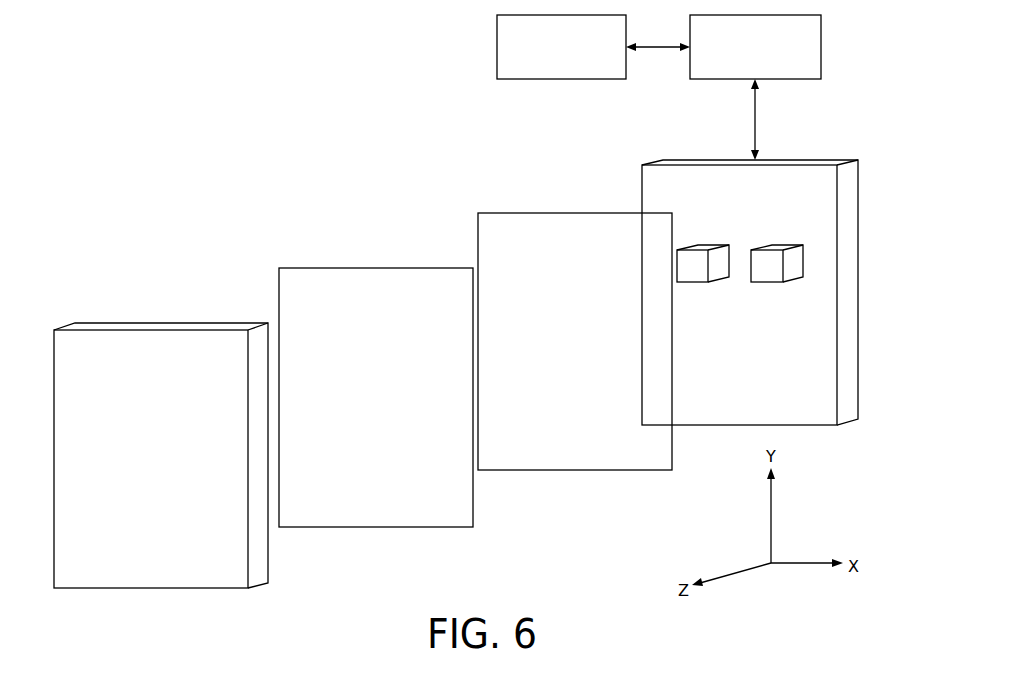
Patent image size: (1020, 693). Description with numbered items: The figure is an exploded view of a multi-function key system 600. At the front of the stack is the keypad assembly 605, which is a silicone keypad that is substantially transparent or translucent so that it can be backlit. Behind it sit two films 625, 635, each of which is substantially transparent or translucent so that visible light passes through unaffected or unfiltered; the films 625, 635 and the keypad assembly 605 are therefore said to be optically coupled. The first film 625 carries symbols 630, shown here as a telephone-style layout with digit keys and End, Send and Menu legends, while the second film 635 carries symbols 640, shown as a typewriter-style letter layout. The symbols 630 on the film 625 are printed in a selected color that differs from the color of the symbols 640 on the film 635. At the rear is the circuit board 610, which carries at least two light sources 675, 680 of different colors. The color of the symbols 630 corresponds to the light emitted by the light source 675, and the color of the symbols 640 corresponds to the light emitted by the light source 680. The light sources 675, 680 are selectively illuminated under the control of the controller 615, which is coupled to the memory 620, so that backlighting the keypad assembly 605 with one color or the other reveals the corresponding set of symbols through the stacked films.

The multi-function key system 600 is at (220, 186).
The keypad assembly 605 is at (124, 323).
The circuit board 610 is at (855, 183).
The controller 615 is at (755, 47).
The memory 620 is at (561, 47).
The film 625 is at (310, 268).
The symbols 630 is at (365, 405).
The film 635 is at (522, 213).
The symbols 640 is at (647, 437).
The light source 675 is at (692, 265).
The light source 680 is at (775, 263).